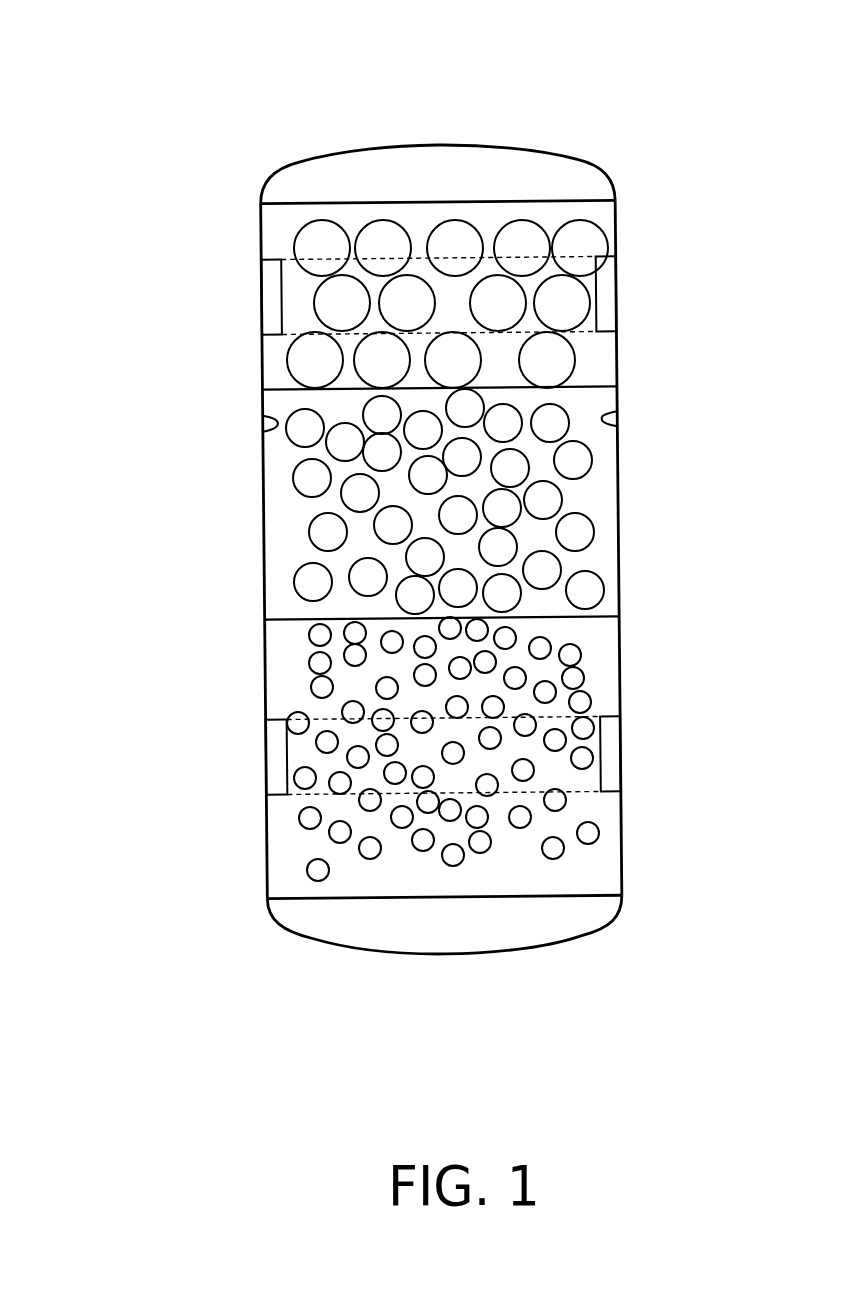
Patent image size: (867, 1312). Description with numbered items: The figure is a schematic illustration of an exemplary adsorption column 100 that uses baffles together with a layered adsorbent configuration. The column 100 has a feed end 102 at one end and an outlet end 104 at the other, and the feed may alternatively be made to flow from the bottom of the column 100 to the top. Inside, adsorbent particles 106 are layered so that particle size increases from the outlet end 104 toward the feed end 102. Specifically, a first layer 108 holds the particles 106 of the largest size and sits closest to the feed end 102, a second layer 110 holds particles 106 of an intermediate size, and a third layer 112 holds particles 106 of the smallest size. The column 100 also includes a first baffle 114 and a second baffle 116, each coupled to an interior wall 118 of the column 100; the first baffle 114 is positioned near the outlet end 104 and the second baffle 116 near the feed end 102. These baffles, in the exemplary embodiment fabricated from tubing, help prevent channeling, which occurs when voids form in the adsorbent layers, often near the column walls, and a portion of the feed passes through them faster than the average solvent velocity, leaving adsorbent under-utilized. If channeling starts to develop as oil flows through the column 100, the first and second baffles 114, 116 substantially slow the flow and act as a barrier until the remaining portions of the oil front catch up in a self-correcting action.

The adsorption column 100 is at (250, 57).
The feed end 102 is at (452, 128).
The outlet end 104 is at (458, 982).
The adsorbent particles 106 is at (297, 361).
The first layer 108 is at (602, 674).
The second layer 110 is at (602, 560).
The third layer 112 is at (598, 348).
The first baffle 114 is at (612, 756).
The second baffle 116 is at (608, 276).
The interior wall 118 is at (264, 425).